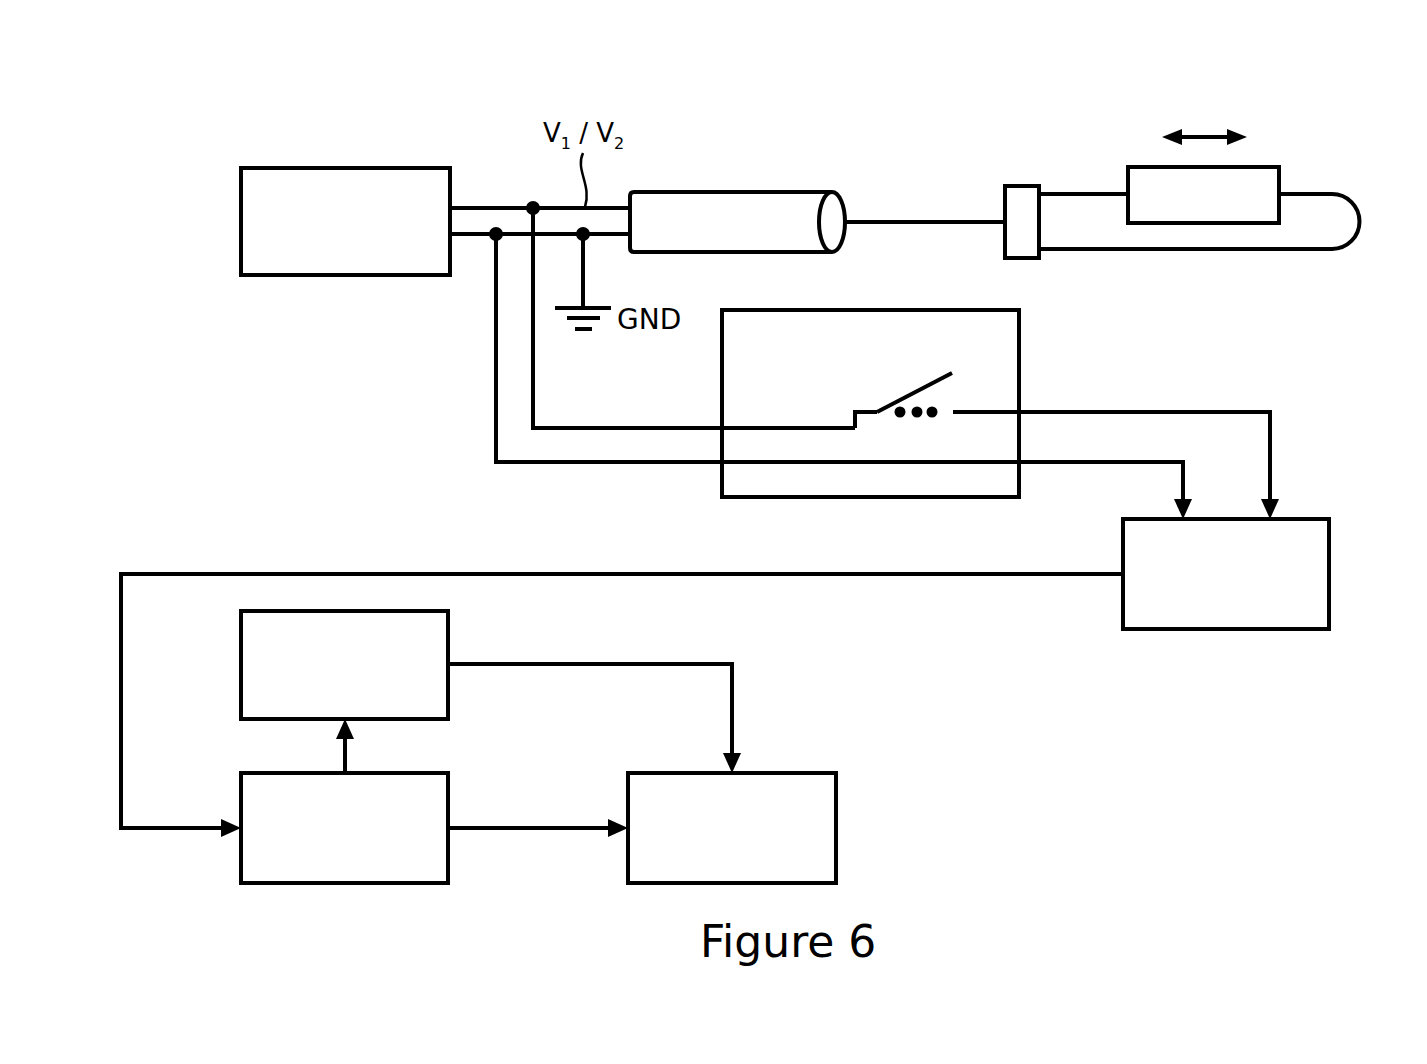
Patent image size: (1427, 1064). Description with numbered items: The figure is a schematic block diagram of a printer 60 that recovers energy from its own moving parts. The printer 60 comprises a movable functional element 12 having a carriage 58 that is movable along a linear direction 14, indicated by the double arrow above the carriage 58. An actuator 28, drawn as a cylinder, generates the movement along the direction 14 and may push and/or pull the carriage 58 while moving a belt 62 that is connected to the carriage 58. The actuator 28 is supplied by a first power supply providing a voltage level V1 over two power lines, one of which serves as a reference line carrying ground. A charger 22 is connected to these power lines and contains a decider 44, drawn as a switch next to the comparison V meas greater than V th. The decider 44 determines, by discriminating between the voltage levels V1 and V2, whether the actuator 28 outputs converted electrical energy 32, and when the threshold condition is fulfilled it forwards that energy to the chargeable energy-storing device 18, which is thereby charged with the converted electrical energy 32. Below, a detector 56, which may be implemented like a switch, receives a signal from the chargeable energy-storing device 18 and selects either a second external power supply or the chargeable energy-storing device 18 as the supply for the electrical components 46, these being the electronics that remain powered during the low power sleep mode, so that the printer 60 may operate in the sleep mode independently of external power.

The printer 60 is at (1419, 81).
The actuator 28 is at (737, 192).
The movable functional element 12 is at (1092, 172).
The belt 62 is at (1200, 251).
The carriage 58 is at (1262, 167).
The linear direction 14 is at (1207, 130).
The charger 22 is at (1019, 374).
The decider 44 is at (930, 368).
The converted electrical energy 32 is at (1272, 460).
The chargeable energy-storing device 18 is at (1329, 576).
The detector 56 is at (448, 796).
The electrical components 46 is at (836, 830).